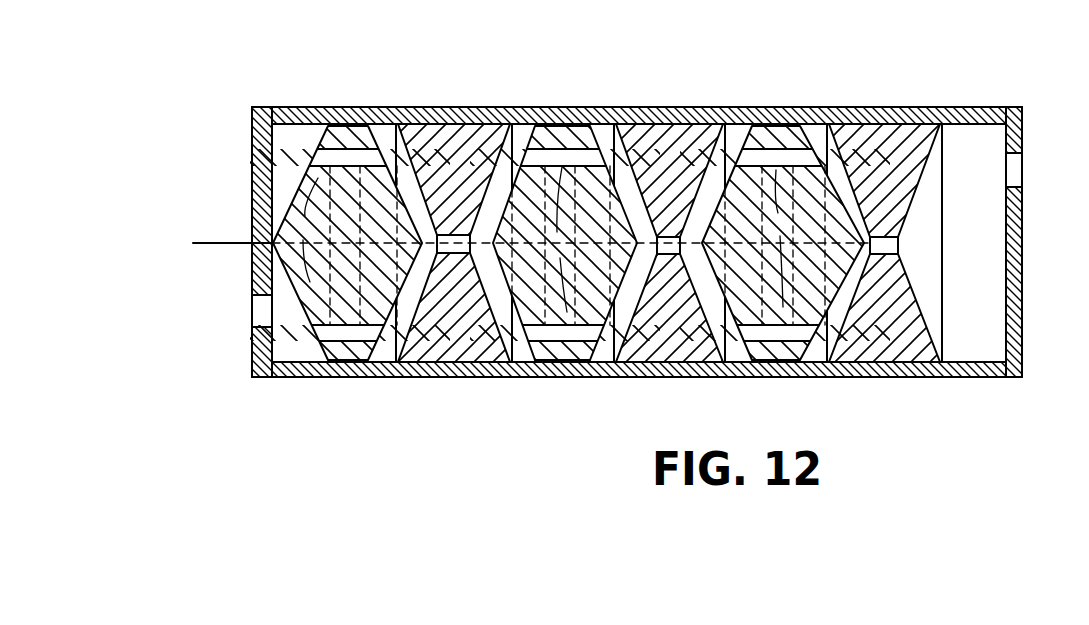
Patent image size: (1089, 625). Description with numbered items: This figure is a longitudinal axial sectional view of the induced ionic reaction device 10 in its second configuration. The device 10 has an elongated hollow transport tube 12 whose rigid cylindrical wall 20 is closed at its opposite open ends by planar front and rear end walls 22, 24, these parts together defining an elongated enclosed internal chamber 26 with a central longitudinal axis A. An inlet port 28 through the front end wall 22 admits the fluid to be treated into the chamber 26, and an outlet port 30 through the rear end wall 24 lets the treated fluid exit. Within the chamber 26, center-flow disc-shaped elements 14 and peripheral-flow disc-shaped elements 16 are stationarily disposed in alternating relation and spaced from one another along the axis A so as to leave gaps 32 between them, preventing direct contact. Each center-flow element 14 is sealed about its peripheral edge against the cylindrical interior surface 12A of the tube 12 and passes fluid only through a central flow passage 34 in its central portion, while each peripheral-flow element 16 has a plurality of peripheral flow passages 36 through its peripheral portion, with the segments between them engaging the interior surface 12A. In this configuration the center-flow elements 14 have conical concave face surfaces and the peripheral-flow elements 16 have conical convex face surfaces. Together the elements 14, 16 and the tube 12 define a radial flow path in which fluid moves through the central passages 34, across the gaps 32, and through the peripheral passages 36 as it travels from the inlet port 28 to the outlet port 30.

The ionic reaction device 10 is at (735, 42).
The transport tube 12 is at (525, 96).
The cylindrical interior surface 12A is at (624, 137).
The center-flow disc-shaped element 14 is at (447, 140).
The peripheral-flow disc-shaped element 16 is at (346, 126).
The cylindrical wall 20 is at (412, 110).
The front end wall 22 is at (260, 162).
The rear end wall 24 is at (1023, 318).
The internal chamber 26 is at (596, 356).
The inlet port 28 is at (262, 323).
The outlet port 30 is at (1020, 158).
The gap 32 is at (529, 136).
The central flow passage 34 is at (452, 250).
The peripheral flow passage 36 is at (543, 239).
The central longitudinal axis A is at (226, 243).